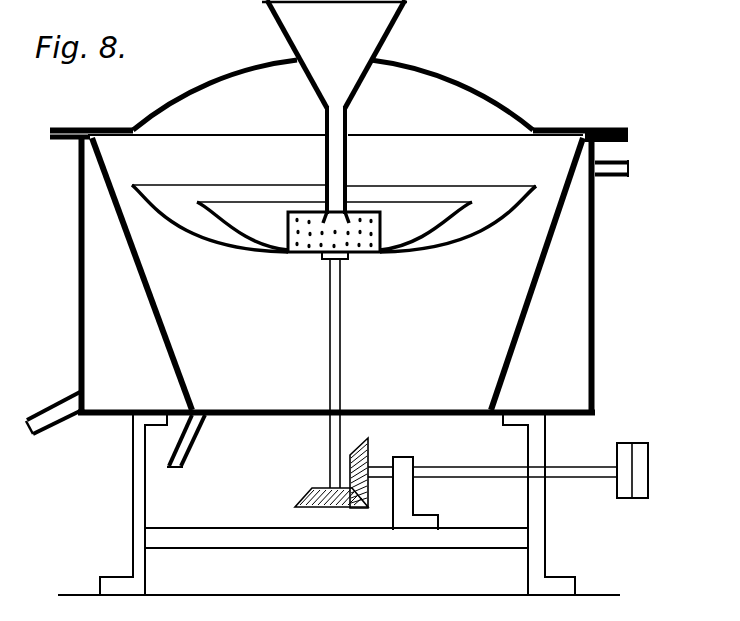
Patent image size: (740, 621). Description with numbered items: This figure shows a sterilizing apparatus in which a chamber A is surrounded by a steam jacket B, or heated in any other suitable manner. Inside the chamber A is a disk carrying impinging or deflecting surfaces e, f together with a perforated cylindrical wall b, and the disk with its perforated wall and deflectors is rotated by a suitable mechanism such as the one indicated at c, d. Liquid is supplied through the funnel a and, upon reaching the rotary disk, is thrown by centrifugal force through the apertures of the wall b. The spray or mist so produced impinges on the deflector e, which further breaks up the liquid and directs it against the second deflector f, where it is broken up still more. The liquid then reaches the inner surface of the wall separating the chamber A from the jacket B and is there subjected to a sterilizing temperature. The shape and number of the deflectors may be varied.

The chamber A is at (336, 301).
The steam jacket B is at (327, 247).
The funnel a is at (334, 111).
The perforated cylindrical wall b is at (382, 226).
The rotating mechanism c is at (312, 490).
The rotating mechanism d is at (623, 447).
The deflector e is at (235, 229).
The second deflector f is at (193, 233).